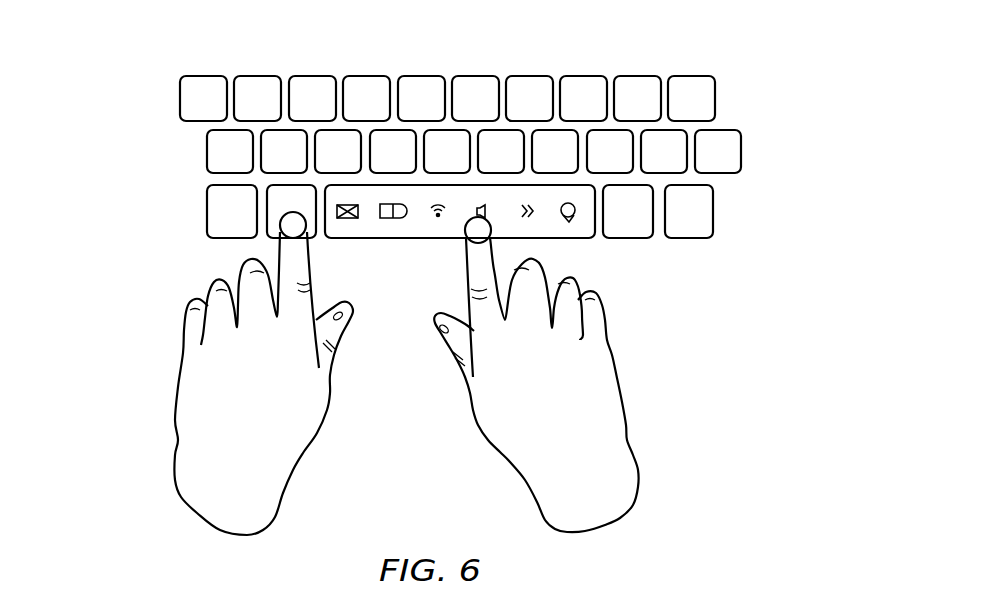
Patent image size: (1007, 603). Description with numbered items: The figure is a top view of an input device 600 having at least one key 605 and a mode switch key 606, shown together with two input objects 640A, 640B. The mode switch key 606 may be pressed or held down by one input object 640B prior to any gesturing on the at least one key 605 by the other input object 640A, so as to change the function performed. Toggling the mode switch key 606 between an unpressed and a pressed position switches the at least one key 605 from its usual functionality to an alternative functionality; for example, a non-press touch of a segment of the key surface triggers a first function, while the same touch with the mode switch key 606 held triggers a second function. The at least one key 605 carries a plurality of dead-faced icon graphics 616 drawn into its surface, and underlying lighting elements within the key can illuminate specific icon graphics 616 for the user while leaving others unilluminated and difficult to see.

The input device 600 is at (747, 77).
The at least one key 605 is at (582, 242).
The mode switch key 606 is at (265, 207).
The dead-faced icon graphics 616 is at (435, 207).
The input object 640A is at (636, 501).
The input object 640B is at (173, 487).